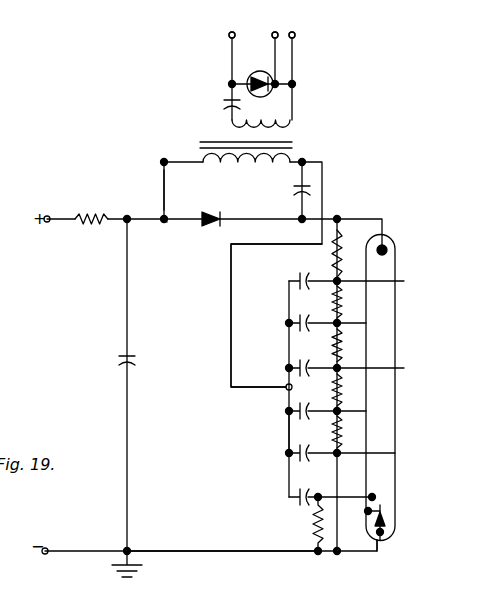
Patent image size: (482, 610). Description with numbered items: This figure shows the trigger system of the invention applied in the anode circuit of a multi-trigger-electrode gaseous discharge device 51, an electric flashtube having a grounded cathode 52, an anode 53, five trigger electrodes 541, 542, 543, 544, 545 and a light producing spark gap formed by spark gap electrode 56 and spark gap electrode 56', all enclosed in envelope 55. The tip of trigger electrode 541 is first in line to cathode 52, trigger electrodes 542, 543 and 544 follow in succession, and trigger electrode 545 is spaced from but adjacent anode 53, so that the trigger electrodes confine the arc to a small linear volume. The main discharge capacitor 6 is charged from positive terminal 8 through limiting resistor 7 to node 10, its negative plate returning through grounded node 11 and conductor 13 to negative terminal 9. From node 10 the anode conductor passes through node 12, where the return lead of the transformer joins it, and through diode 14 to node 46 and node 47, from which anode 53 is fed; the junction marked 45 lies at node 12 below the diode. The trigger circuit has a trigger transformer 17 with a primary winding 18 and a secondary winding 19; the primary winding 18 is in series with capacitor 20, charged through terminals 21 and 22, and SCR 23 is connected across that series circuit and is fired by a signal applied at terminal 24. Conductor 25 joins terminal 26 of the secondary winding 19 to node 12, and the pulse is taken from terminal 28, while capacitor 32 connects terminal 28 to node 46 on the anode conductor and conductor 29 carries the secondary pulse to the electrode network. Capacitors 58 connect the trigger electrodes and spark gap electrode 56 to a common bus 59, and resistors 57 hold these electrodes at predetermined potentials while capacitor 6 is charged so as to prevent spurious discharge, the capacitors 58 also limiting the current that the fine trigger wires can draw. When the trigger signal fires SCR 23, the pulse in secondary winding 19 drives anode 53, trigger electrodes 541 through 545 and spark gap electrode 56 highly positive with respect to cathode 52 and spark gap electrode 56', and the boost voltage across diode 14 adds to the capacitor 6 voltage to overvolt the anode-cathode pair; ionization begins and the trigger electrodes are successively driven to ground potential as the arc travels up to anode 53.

The main discharge capacitor 6 is at (133, 363).
The limiting resistor 7 is at (86, 215).
The positive terminal 8 is at (47, 216).
The negative terminal 9 is at (45, 548).
The node 10 is at (124, 215).
The node 11 is at (124, 547).
The junction 12 is at (142, 208).
The conductor 13 is at (287, 553).
The diode 14 is at (205, 212).
The trigger transformer 17 is at (206, 141).
The primary winding 18 is at (262, 128).
The secondary winding 19 is at (240, 162).
The capacitor 20 is at (226, 100).
The terminal 21 is at (229, 33).
The terminal 22 is at (295, 33).
The SCR 23 is at (261, 71).
The terminal 24 is at (273, 32).
The conductor 25 is at (164, 197).
The terminal 26 is at (161, 159).
The terminal 28 is at (304, 160).
The conductor 29 is at (231, 297).
The capacitor 32 is at (298, 191).
The junction 45 is at (166, 222).
The junction 46 is at (300, 222).
The junction 47 is at (337, 222).
The gaseous discharge device 51 is at (388, 348).
The cathode 52 is at (386, 521).
The anode 53 is at (385, 252).
The trigger electrode 541 is at (395, 454).
The trigger electrode 542 is at (366, 411).
The trigger electrode 543 is at (385, 377).
The trigger electrode 544 is at (366, 323).
The trigger electrode 545 is at (385, 285).
The envelope 55 is at (392, 536).
The spark gap electrode 56 is at (387, 490).
The spark gap electrode 56' is at (404, 509).
The resistor 57 is at (332, 262).
The capacitor 58 is at (289, 301).
The common bus 59 is at (290, 431).